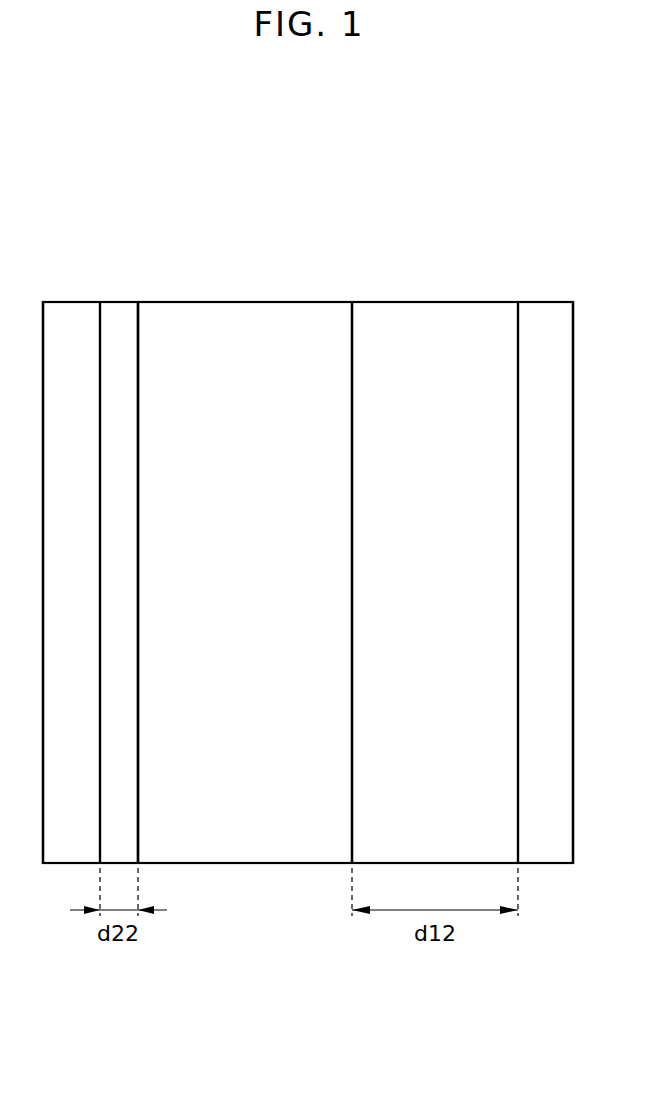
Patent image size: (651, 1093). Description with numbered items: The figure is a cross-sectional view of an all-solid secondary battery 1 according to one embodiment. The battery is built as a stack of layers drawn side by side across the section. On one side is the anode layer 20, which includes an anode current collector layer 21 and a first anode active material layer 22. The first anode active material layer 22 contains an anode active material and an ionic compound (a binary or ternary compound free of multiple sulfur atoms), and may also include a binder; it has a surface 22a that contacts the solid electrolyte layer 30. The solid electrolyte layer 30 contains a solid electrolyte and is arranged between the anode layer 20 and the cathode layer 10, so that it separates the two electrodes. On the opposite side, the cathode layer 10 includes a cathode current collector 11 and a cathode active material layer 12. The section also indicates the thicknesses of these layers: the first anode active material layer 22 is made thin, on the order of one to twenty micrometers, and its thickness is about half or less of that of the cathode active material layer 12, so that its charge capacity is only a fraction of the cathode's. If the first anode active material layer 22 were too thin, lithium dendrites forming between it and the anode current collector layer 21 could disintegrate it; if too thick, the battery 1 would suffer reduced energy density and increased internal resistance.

The all-solid secondary battery 1 is at (379, 213).
The cathode layer 10 is at (552, 214).
The cathode current collector 11 is at (543, 308).
The cathode active material layer 12 is at (433, 308).
The anode layer 20 is at (58, 214).
The anode current collector layer 21 is at (70, 308).
The first anode active material layer 22 is at (118, 308).
The surface 22a is at (138, 328).
The solid electrolyte layer 30 is at (242, 308).